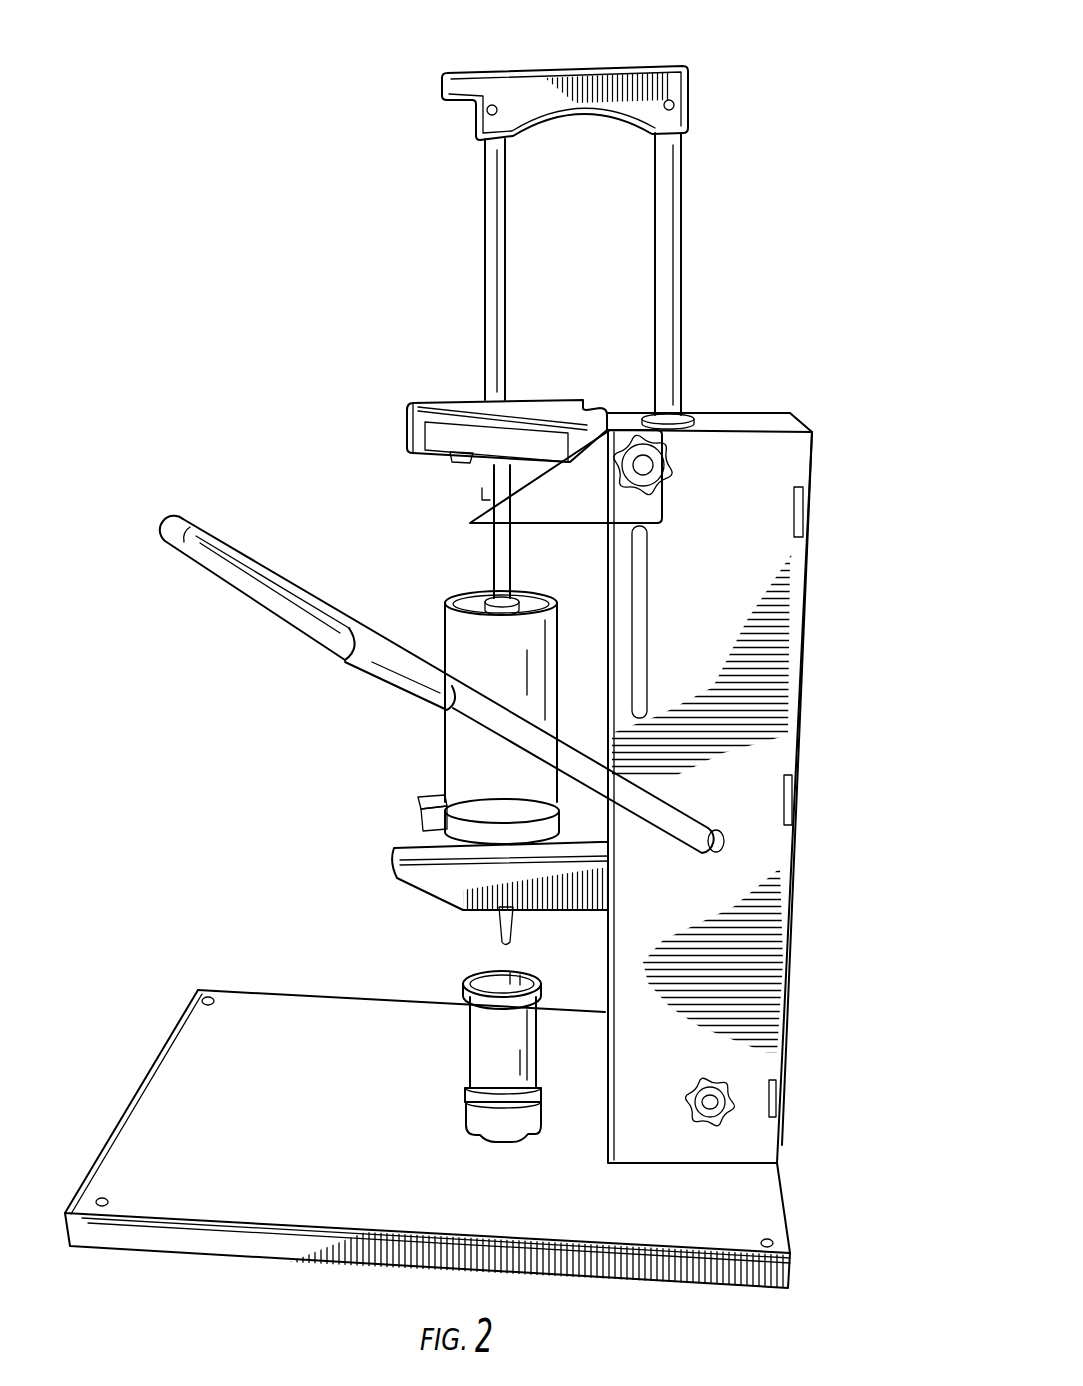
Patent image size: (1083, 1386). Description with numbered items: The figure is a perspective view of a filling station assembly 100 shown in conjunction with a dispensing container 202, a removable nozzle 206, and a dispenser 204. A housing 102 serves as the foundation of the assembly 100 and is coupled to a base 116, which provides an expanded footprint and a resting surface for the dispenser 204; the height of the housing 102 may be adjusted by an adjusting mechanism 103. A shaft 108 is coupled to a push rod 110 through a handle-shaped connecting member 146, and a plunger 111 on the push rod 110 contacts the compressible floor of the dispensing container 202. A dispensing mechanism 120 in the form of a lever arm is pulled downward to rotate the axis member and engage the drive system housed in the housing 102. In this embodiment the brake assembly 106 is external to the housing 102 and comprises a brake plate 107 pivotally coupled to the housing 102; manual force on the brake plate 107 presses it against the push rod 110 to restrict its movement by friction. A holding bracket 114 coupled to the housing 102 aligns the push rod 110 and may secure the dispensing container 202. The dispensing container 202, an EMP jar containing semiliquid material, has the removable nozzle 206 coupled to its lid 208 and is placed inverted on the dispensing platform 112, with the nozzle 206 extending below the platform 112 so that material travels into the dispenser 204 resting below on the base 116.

The filling station assembly 100 is at (843, 324).
The housing 102 is at (795, 1040).
The adjusting mechanism 103 is at (742, 1100).
The brake assembly 106 is at (400, 437).
The brake plate 107 is at (455, 458).
The shaft 108 is at (683, 250).
The push rod 110 is at (487, 292).
The plunger 111 is at (482, 592).
The dispensing platform 112 is at (392, 858).
The holding bracket 114 is at (470, 513).
The base 116 is at (132, 1249).
The dispensing mechanism 120 is at (162, 535).
The connecting member 146 is at (690, 92).
The dispensing container 202 is at (447, 752).
The dispenser 204 is at (465, 1000).
The removable nozzle 206 is at (480, 928).
The lid 208 is at (418, 820).